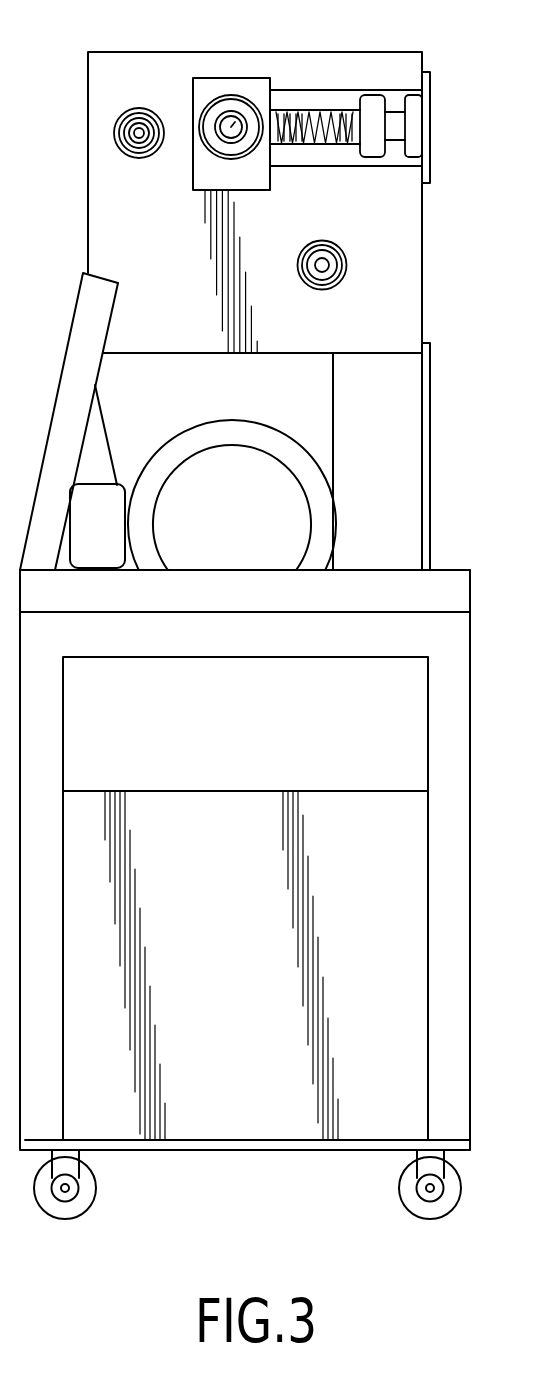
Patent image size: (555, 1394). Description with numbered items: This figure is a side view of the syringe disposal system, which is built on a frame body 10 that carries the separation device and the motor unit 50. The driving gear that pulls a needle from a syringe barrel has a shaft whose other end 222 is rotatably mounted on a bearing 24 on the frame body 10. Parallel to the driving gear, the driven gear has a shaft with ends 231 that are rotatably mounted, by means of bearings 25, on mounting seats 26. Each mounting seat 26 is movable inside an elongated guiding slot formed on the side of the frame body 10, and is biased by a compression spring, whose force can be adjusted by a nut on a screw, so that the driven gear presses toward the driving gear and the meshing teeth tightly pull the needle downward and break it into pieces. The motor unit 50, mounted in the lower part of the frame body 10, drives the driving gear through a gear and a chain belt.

The frame body 10 is at (477, 740).
The bearing 24 is at (133, 115).
The other end of the driving gear shaft 222 is at (128, 143).
The bearing 25 is at (220, 97).
The mounting seat 26 is at (255, 90).
The end of the driven gear shaft 231 is at (235, 122).
The motor unit 50 is at (310, 512).